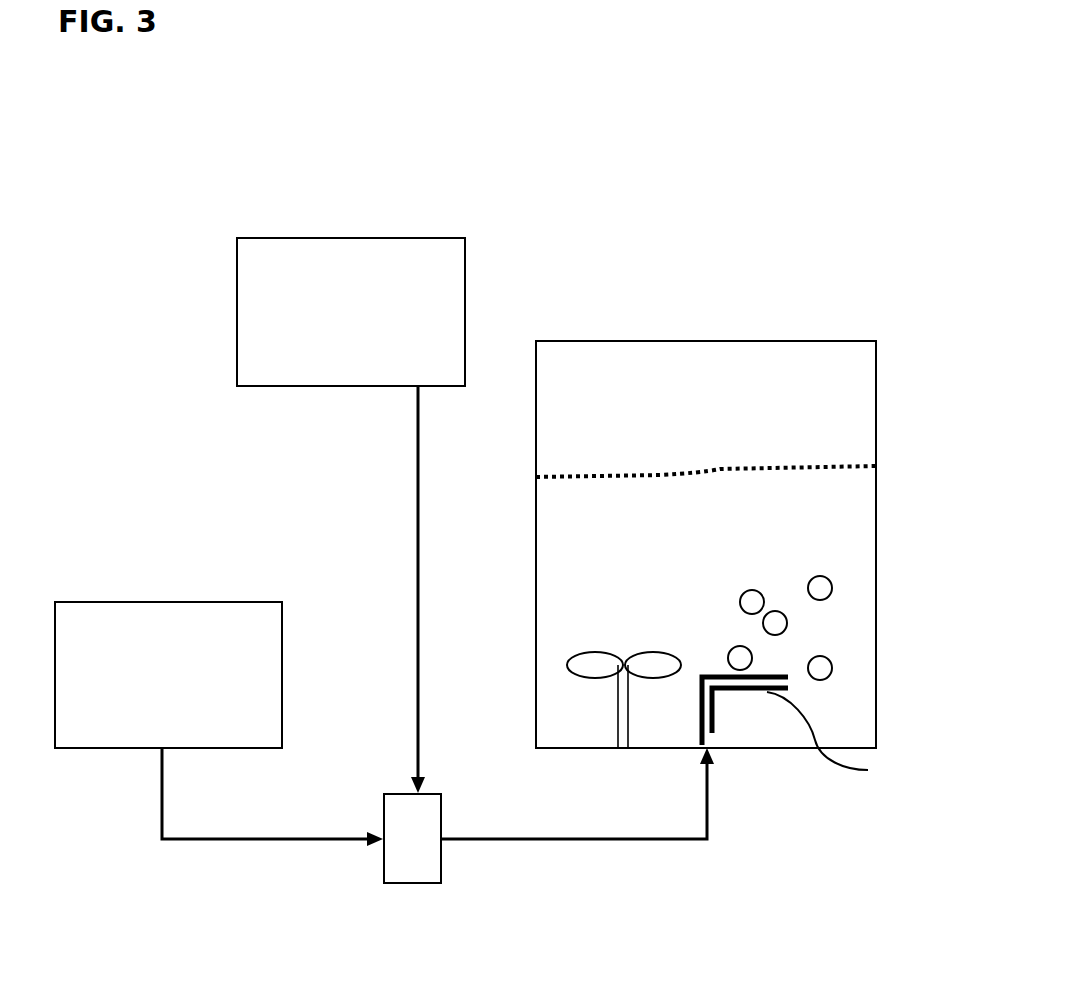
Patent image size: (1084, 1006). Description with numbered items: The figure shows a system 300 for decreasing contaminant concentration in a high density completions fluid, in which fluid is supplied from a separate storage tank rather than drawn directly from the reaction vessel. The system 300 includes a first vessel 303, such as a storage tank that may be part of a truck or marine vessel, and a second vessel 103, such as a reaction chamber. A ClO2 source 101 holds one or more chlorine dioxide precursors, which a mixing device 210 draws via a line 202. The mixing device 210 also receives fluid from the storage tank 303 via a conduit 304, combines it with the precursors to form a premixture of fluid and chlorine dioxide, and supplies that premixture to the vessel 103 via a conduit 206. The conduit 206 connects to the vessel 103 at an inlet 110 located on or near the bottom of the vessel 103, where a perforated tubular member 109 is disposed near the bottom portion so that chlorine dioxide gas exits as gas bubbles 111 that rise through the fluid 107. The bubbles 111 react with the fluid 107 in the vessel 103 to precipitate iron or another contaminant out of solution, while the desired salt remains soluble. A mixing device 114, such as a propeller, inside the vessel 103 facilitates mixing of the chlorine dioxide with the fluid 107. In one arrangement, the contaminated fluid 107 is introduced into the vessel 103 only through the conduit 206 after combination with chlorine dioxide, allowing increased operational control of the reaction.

The system 300 is at (411, 115).
The first vessel 303 is at (351, 312).
The conduit 304 is at (382, 589).
The ClO2 source 101 is at (168, 675).
The line 202 is at (272, 827).
The mixing device 210 is at (407, 883).
The conduit 206 is at (577, 827).
The second vessel 103 is at (860, 341).
The fluid 107 is at (555, 522).
The mixing device 114 is at (610, 714).
The inlet 110 is at (713, 748).
The perforated tubular member 109 is at (852, 749).
The gas bubbles 111 is at (828, 578).